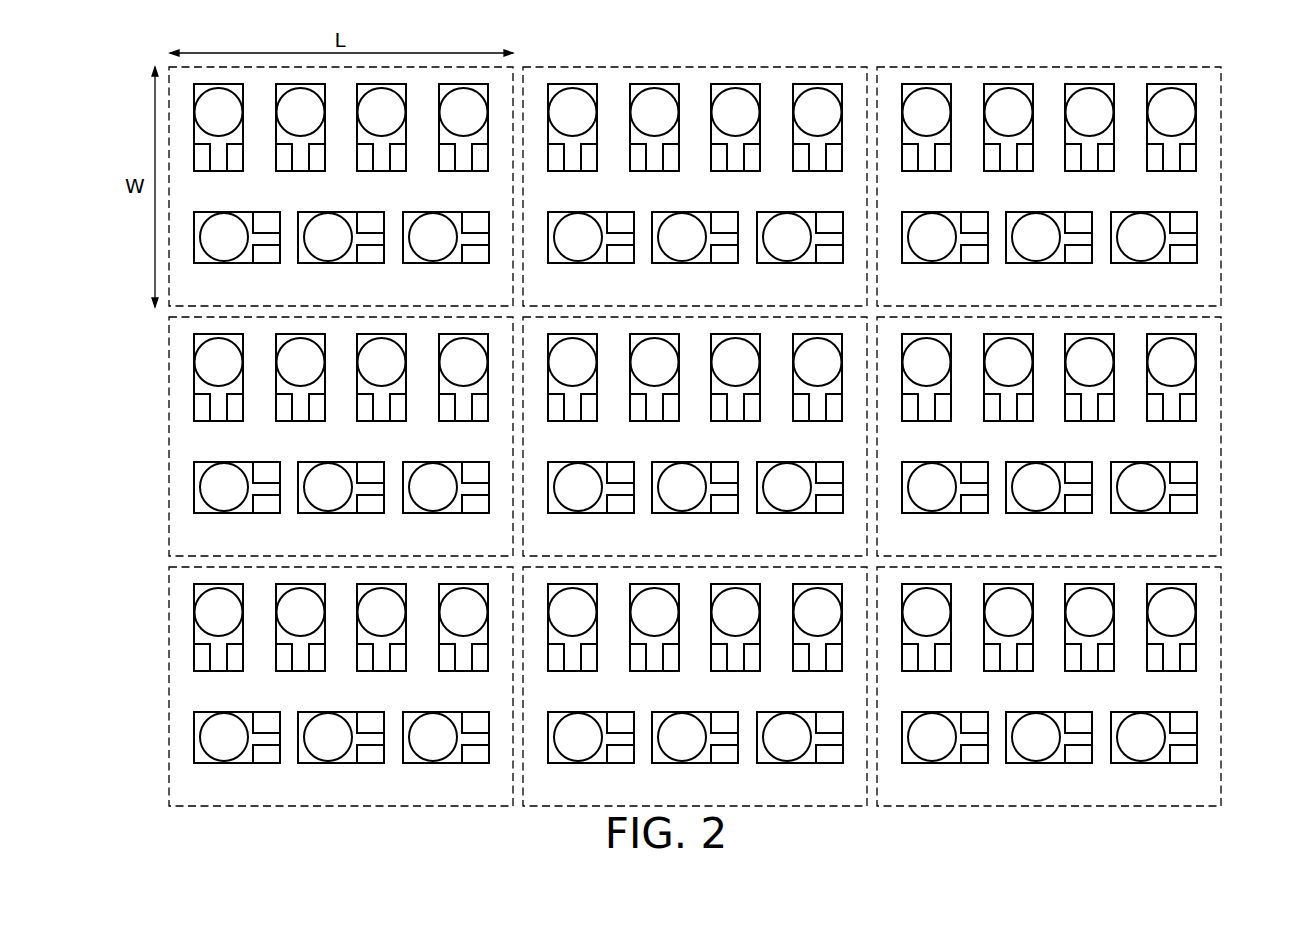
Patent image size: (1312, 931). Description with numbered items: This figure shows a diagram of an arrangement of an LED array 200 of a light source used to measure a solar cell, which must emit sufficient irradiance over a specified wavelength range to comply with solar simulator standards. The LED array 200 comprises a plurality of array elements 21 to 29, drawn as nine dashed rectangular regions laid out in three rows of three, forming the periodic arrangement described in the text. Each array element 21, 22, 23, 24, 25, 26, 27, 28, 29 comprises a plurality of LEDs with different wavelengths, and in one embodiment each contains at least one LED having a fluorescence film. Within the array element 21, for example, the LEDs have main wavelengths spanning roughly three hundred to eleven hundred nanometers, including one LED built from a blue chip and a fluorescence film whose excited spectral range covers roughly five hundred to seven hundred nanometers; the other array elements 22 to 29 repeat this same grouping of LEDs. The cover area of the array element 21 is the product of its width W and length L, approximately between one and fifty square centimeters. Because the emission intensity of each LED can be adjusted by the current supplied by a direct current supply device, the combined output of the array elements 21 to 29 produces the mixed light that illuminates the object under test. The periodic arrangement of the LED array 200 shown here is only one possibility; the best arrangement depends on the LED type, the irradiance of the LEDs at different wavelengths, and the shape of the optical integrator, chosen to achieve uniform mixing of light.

The LED array 200 is at (103, 68).
The array element 21 is at (182, 306).
The array element 22 is at (767, 67).
The array element 23 is at (1222, 187).
The array element 24 is at (169, 437).
The array element 25 is at (550, 557).
The array element 26 is at (1222, 437).
The array element 27 is at (169, 688).
The array element 28 is at (767, 806).
The array element 29 is at (1222, 687).